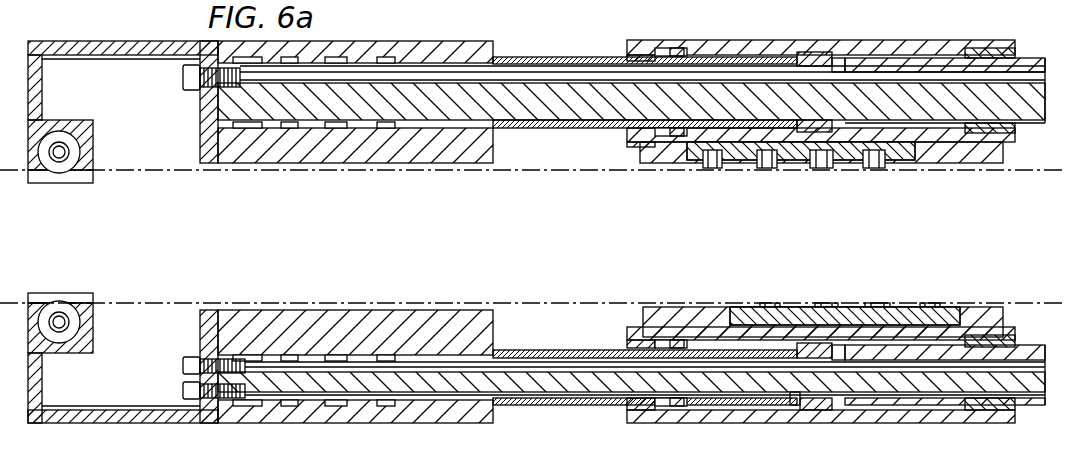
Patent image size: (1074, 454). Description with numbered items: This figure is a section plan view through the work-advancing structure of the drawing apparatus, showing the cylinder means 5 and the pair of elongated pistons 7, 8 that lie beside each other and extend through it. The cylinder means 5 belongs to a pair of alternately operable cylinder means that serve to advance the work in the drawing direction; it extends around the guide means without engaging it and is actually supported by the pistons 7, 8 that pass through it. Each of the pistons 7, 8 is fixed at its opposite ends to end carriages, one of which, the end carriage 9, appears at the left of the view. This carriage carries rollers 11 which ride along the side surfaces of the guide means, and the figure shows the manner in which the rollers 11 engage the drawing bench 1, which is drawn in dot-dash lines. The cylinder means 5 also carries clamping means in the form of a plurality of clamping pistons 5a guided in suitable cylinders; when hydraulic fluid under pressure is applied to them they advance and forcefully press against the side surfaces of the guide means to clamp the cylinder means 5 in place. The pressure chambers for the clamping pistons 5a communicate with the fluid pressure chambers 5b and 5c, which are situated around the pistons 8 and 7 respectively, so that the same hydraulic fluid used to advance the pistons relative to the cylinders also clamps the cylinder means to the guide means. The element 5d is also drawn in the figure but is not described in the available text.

The drawing bench 1 is at (12, 300).
The cylinder means 5 is at (712, 52).
The clamping pistons 5a is at (872, 168).
The fluid pressure chamber 5b is at (956, 340).
The fluid pressure chamber 5c is at (886, 46).
The guide tube 5d is at (698, 345).
The piston 7 is at (553, 118).
The piston 8 is at (564, 385).
The end carriage 9 is at (42, 86).
The rollers 11 is at (60, 165).